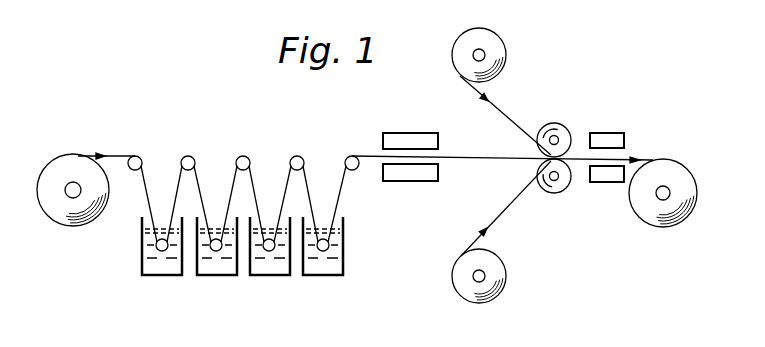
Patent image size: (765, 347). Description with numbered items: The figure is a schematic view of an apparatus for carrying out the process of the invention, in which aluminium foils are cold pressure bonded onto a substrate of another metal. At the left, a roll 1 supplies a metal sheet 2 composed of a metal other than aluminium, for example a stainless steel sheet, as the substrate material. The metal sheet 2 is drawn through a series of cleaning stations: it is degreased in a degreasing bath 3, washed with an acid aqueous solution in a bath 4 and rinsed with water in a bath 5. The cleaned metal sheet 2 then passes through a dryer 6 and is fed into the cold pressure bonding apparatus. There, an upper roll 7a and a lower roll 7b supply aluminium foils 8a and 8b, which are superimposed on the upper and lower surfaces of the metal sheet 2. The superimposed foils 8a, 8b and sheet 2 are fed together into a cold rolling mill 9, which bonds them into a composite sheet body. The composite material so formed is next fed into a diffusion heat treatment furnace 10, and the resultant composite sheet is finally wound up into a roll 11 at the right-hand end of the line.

The roll 1 is at (78, 226).
The metal sheet 2 is at (118, 157).
The degreasing bath 3 is at (157, 276).
The bath 4 is at (270, 276).
The bath 5 is at (212, 276).
The dryer 6 is at (410, 183).
The upper roll 7a is at (504, 46).
The lower roll 7b is at (500, 292).
The aluminium foil 8a is at (508, 118).
The aluminium foil 8b is at (510, 200).
The cold rolling mill 9 is at (565, 192).
The diffusion heat treatment furnace 10 is at (614, 133).
The roll 11 is at (660, 228).